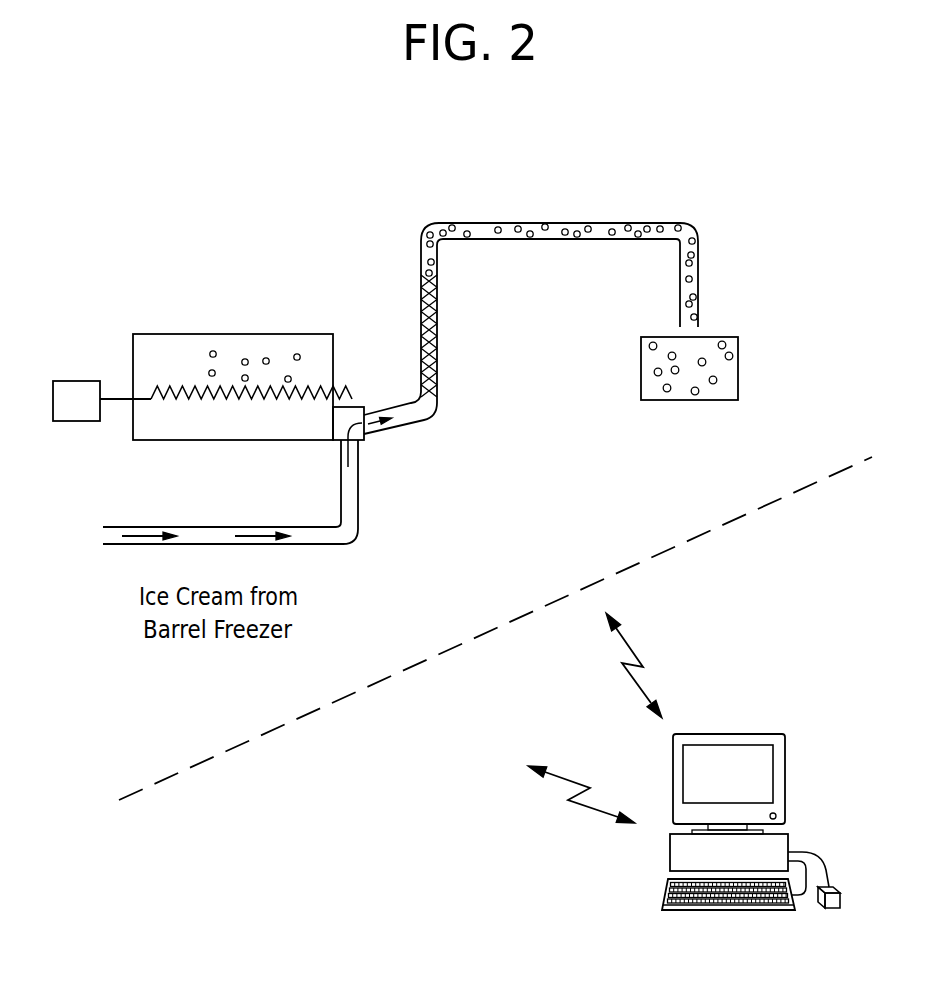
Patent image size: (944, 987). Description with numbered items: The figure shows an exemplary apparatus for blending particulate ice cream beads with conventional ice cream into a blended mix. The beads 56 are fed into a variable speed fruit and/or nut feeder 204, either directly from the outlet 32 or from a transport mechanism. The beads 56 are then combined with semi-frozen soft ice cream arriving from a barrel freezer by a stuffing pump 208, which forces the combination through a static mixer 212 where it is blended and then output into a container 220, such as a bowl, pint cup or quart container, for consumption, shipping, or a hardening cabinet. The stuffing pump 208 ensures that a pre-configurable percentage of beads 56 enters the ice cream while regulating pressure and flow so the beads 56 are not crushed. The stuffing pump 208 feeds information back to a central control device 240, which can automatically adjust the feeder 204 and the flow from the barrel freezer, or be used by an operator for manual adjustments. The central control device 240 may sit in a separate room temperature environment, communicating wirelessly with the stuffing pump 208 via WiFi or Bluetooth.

The variable speed fruit and/or nut feeder 204 is at (152, 334).
The outlet 32 is at (102, 401).
The beads 56 is at (297, 354).
The stuffing pump 208 is at (365, 446).
The static mixer 212 is at (437, 328).
The container 220 is at (695, 403).
The central control device 240 is at (748, 864).